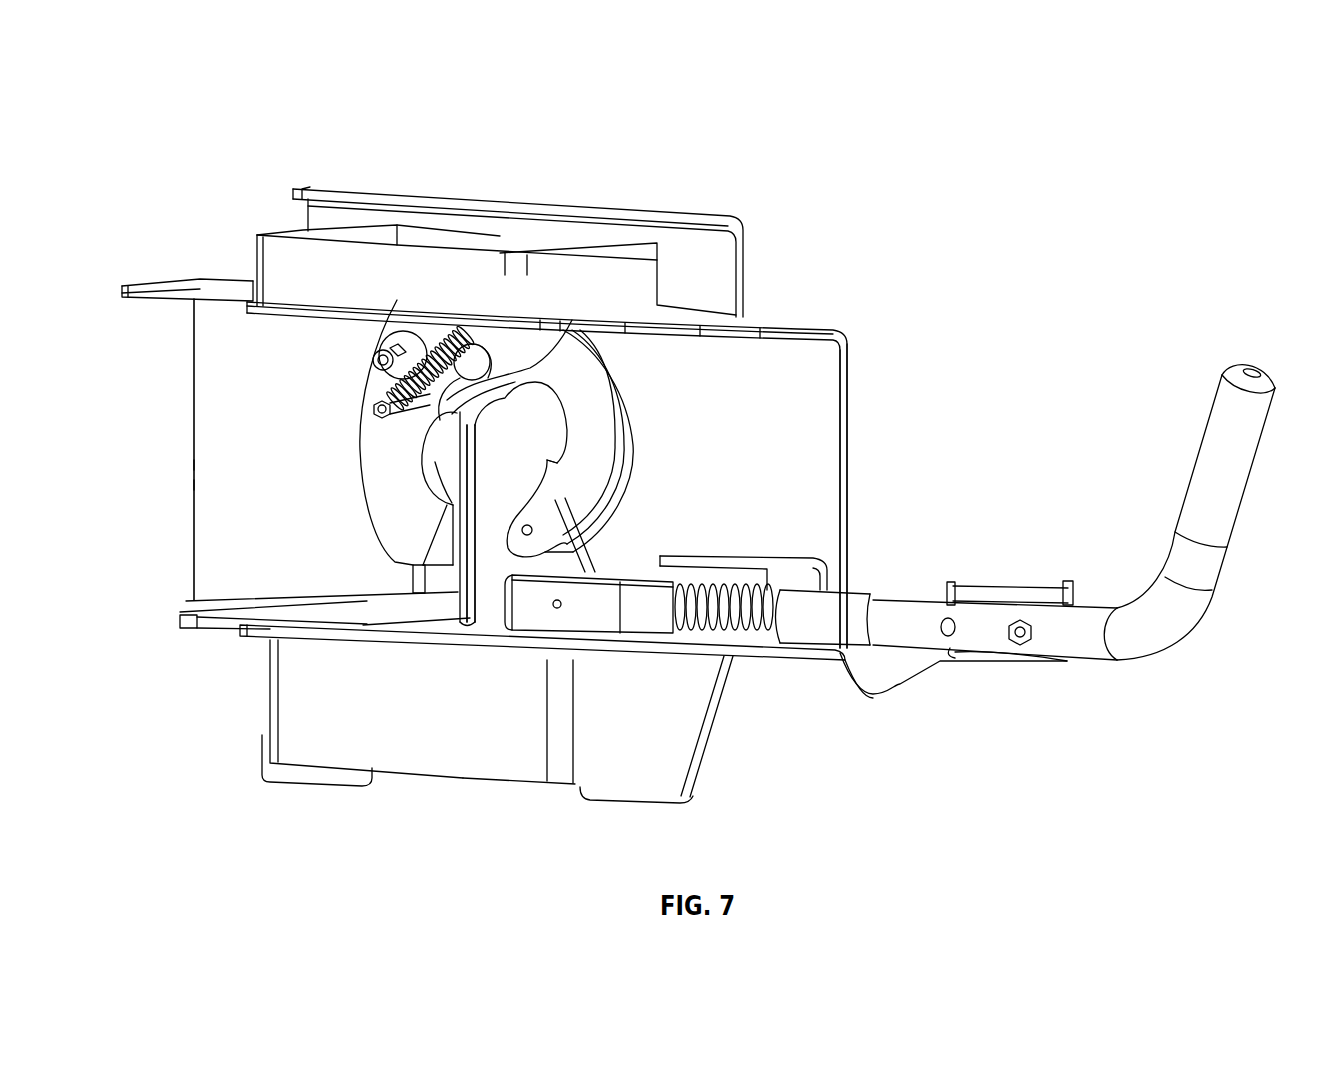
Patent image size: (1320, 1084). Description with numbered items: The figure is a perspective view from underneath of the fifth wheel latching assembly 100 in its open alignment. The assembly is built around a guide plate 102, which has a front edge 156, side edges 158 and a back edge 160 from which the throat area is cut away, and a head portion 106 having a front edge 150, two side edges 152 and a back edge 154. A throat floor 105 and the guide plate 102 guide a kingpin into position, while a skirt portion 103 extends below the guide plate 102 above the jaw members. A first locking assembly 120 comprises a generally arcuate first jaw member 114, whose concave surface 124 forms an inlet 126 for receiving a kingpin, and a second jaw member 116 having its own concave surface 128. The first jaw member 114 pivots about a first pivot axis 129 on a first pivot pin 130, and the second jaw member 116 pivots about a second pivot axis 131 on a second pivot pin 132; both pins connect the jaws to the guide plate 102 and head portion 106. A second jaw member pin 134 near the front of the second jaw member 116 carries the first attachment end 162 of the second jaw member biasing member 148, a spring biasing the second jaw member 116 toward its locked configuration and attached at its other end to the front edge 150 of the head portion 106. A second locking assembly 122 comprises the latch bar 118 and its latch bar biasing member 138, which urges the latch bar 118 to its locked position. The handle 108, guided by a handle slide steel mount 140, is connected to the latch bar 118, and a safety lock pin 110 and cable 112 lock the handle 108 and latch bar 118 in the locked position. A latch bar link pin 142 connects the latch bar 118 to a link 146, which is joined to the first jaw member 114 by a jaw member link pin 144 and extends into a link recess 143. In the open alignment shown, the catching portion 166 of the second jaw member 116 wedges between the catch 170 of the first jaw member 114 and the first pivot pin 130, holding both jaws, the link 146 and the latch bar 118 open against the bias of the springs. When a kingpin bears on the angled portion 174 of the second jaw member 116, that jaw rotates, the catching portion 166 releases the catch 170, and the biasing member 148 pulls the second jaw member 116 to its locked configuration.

The latching assembly 100 is at (210, 115).
The guide plate 102 is at (745, 272).
The skirt portion 103 is at (537, 452).
The throat floor 105 is at (403, 702).
The head portion 106 is at (212, 348).
The handle 108 is at (1213, 442).
The safety lock pin 110 is at (1034, 602).
The cable 112 is at (900, 690).
The first jaw member 114 is at (595, 388).
The second jaw member 116 is at (365, 443).
The latch bar 118 is at (632, 624).
The first locking assembly 120 is at (248, 467).
The second locking assembly 122 is at (758, 732).
The concave surface 124 is at (573, 431).
The inlet 126 is at (513, 447).
The concave surface 128 is at (423, 455).
The first pivot axis 129 is at (374, 362).
The first pivot pin 130 is at (514, 320).
The second pivot axis 131 is at (353, 362).
The second pivot pin 132 is at (396, 346).
The second jaw member pin 134 is at (369, 420).
The latch bar biasing member 138 is at (730, 646).
The handle slide steel mount 140 is at (745, 556).
The latch bar link pin 142 is at (530, 566).
The link recess 143 is at (590, 527).
The jaw member link pin 144 is at (508, 532).
The link 146 is at (586, 564).
The second jaw member biasing member 148 is at (462, 345).
The front edge 150 is at (208, 289).
The side edges 152 is at (194, 453).
The back edge 154 is at (221, 632).
The front edge 156 is at (318, 191).
The side edges 158 is at (748, 306).
The back edge 160 is at (276, 782).
The first attachment end 162 is at (375, 393).
The catching portion 166 is at (363, 478).
The catch 170 is at (572, 320).
The angled portion 174 is at (460, 582).